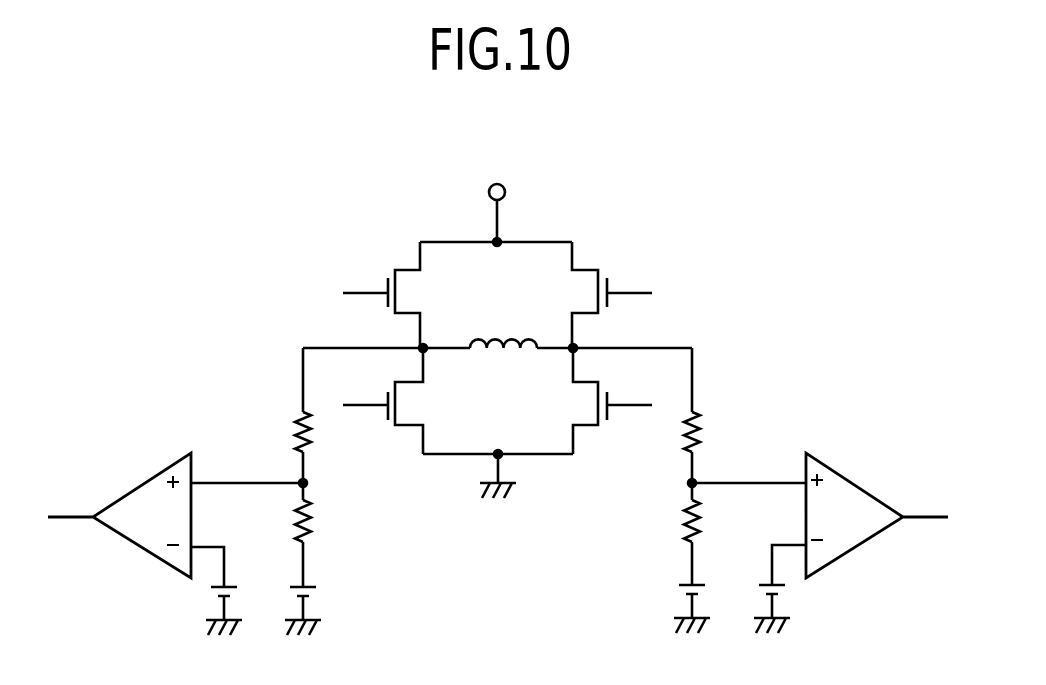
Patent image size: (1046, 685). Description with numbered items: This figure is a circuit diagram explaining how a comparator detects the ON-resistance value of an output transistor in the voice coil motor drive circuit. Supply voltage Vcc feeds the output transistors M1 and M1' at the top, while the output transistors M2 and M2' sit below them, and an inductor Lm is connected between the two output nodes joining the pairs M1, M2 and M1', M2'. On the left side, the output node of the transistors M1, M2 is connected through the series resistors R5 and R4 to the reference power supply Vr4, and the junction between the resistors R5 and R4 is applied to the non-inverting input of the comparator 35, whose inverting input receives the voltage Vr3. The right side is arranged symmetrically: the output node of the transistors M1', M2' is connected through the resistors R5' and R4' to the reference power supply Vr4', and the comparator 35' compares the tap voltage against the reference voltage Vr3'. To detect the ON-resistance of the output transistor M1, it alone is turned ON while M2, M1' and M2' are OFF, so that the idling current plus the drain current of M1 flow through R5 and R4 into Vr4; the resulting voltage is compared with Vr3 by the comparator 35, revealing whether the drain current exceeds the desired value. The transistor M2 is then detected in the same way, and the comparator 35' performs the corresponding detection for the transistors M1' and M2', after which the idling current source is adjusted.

The comparator 35 is at (119, 495).
The comparator 35' is at (877, 488).
The output transistor M1 is at (399, 295).
The output transistor M1' is at (612, 286).
The output transistor M2 is at (400, 401).
The output transistor M2' is at (612, 406).
The inductor Lm is at (503, 318).
The resistor R4 is at (280, 522).
The resistor R4' is at (715, 522).
The resistor R5 is at (280, 433).
The resistor R5' is at (715, 433).
The supply voltage Vcc is at (491, 171).
The voltage Vr3 is at (189, 606).
The reference voltage source Vr3' is at (795, 604).
The reference power supply Vr4 is at (326, 604).
The reference voltage source Vr4' is at (661, 598).